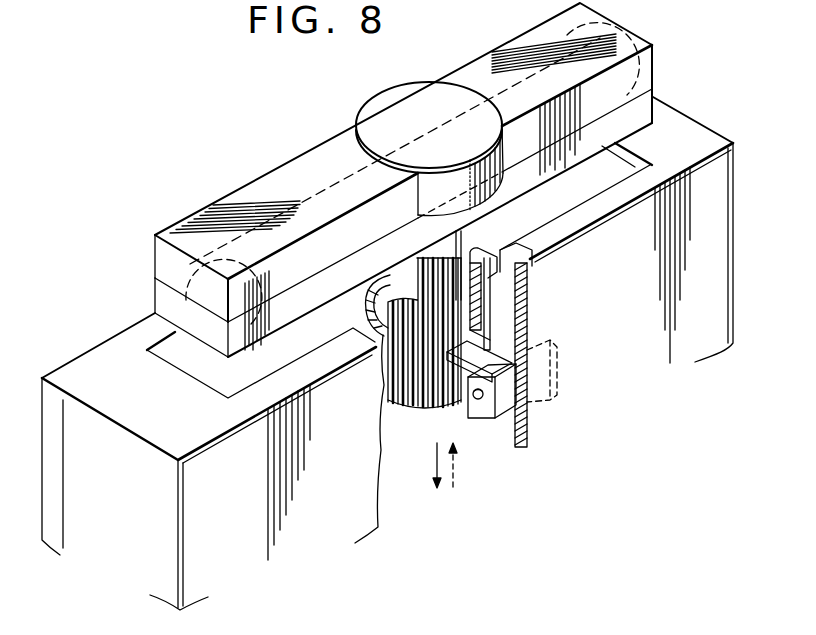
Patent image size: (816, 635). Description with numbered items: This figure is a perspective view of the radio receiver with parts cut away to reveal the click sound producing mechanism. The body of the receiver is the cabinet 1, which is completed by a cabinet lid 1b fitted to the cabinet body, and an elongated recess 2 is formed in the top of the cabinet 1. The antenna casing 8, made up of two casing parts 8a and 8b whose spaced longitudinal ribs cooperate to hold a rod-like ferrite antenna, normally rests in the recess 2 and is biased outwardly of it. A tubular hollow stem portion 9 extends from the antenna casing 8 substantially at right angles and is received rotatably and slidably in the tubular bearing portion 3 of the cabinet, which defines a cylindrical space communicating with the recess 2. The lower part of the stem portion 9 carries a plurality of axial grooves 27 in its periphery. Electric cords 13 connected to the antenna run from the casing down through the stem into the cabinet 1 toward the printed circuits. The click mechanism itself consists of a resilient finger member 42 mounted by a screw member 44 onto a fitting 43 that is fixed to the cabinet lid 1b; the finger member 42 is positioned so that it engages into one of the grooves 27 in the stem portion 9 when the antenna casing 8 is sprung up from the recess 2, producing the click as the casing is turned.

The cabinet 1 is at (689, 132).
The cabinet lid 1b is at (563, 427).
The elongated recess 2 is at (194, 370).
The tubular bearing portion 3 is at (372, 305).
The antenna casing 8 is at (258, 186).
The casing part 8a is at (166, 297).
The casing part 8b is at (166, 259).
The tubular hollow stem portion 9 is at (456, 244).
The electric cords 13 is at (436, 415).
The axial grooves 27 is at (397, 374).
The resilient finger member 42 is at (465, 364).
The fitting 43 is at (503, 416).
The screw member 44 is at (482, 420).